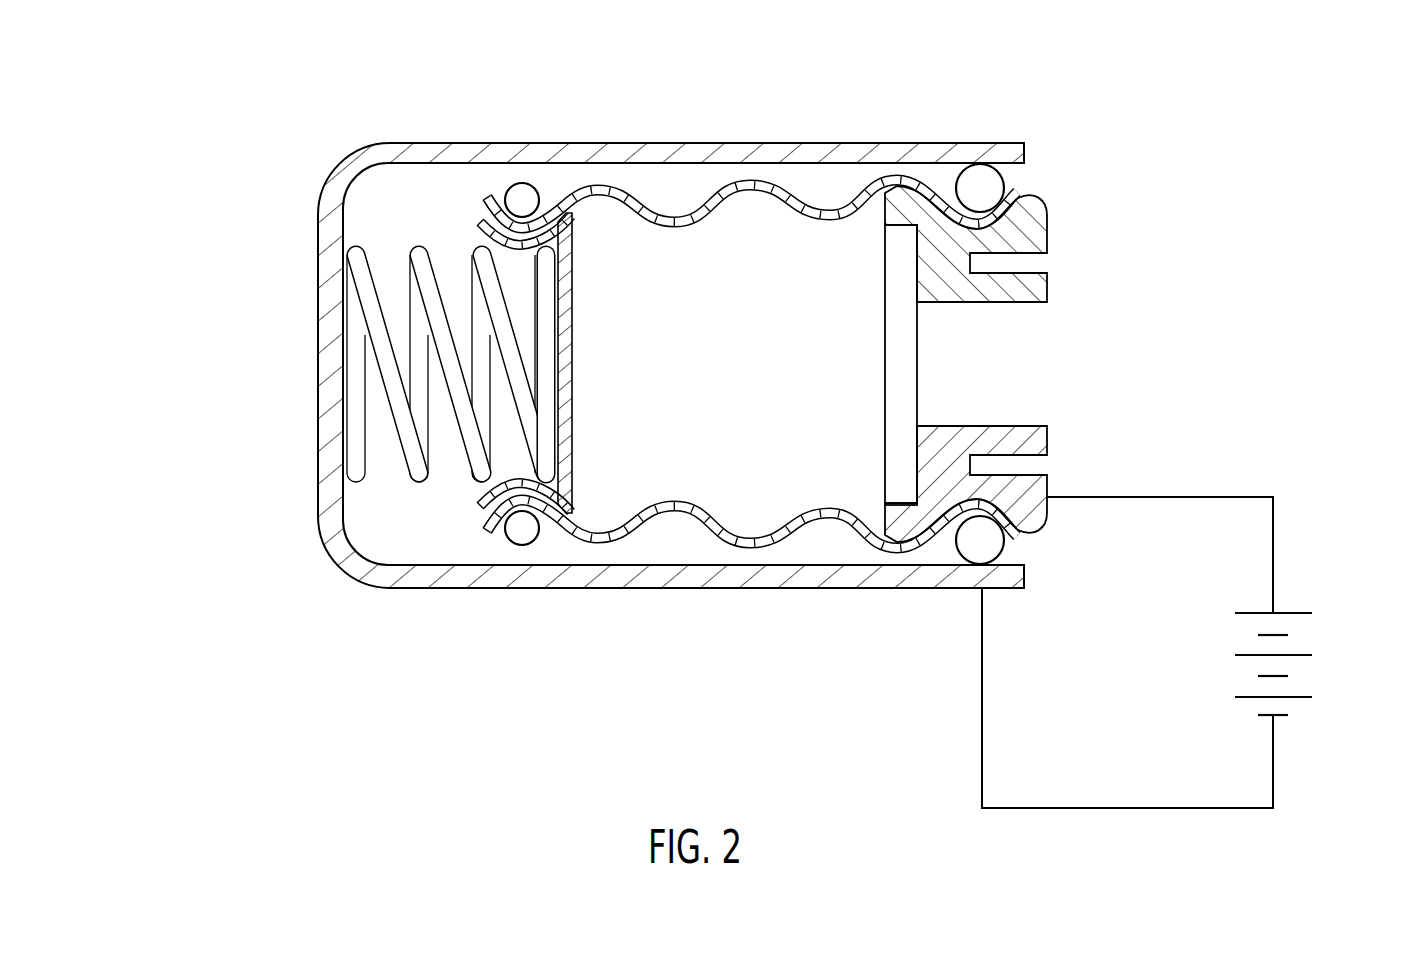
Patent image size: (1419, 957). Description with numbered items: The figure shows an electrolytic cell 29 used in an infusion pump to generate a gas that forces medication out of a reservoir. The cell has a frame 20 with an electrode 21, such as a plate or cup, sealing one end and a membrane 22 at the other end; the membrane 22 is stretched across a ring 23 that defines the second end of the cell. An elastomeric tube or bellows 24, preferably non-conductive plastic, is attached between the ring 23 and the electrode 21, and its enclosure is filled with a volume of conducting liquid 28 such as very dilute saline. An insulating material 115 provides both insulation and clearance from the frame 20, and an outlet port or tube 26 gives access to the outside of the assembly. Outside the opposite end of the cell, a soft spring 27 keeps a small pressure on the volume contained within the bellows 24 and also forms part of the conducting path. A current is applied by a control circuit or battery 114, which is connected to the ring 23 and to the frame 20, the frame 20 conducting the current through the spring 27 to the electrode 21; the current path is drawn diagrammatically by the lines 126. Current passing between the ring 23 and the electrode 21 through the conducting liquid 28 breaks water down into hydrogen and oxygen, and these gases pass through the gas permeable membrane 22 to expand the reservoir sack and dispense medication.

The frame 20 is at (820, 140).
The electrode 21 is at (573, 350).
The membrane 22 is at (885, 467).
The ring 23 is at (1047, 507).
The bellows 24 is at (598, 548).
The outlet port 26 is at (1050, 375).
The spring 27 is at (419, 262).
The conducting liquid 28 is at (810, 325).
The electrolytic cell 29 is at (263, 547).
The battery 114 is at (1313, 672).
The insulating material 115 is at (953, 537).
The current path line 126 is at (1188, 497).